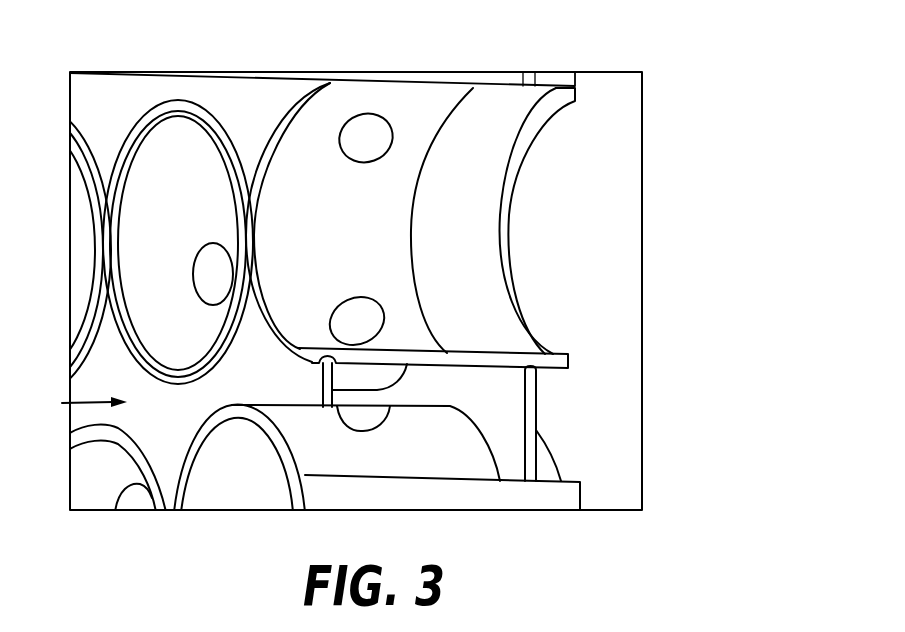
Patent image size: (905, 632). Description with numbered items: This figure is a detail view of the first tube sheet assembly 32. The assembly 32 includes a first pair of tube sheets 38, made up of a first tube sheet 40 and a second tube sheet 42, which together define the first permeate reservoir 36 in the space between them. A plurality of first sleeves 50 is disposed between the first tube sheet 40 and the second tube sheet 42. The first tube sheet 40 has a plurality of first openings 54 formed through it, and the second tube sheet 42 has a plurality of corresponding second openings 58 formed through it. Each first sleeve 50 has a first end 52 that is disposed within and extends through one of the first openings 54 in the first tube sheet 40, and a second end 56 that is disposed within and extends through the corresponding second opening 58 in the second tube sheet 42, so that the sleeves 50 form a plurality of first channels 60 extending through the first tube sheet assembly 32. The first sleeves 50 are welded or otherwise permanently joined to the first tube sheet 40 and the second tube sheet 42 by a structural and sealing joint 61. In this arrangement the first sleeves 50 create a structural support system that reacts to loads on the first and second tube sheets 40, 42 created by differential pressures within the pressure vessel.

The first tube sheet assembly 32 is at (498, 46).
The first permeate reservoir 36 is at (480, 403).
The first pair of tube sheets 38 is at (440, 78).
The first tube sheet 40 is at (76, 409).
The second tube sheet 42 is at (538, 432).
The first sleeve 50 is at (492, 223).
The first end 52 is at (272, 352).
The first openings 54 is at (295, 337).
The second end 56 is at (525, 315).
The second openings 58 is at (490, 454).
The first channels 60 is at (146, 150).
The structural and sealing joint 61 is at (228, 330).